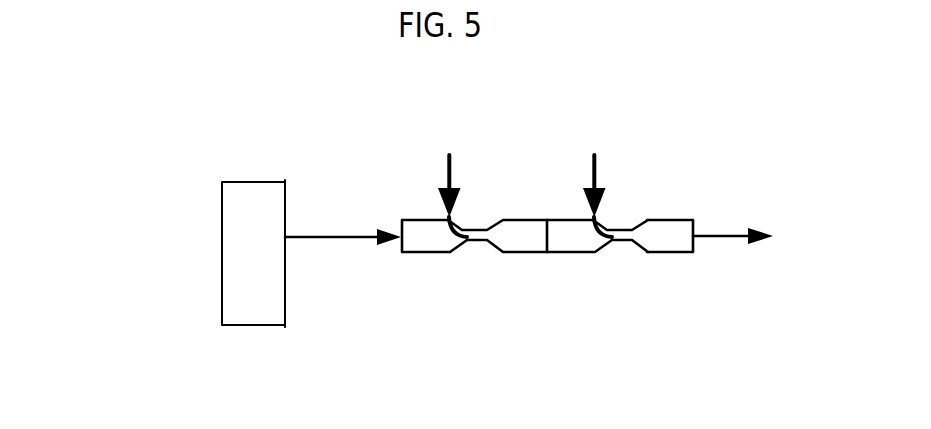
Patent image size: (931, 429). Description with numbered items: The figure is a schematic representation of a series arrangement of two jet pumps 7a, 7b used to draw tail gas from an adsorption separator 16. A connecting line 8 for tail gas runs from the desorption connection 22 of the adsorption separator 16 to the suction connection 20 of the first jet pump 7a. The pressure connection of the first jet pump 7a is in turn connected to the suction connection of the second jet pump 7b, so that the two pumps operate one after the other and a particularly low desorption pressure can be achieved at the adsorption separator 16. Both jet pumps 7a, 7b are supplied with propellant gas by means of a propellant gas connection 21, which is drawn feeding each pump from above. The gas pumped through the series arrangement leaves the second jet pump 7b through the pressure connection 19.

The adsorption separator 16 is at (196, 262).
The connecting line 8 is at (346, 236).
The desorption connection 22 is at (285, 237).
The suction connection 20 is at (412, 253).
The jet pump 7a is at (483, 267).
The jet pump 7b is at (628, 267).
The propellant gas connection 21 is at (590, 217).
The pressure connection 19 is at (695, 240).